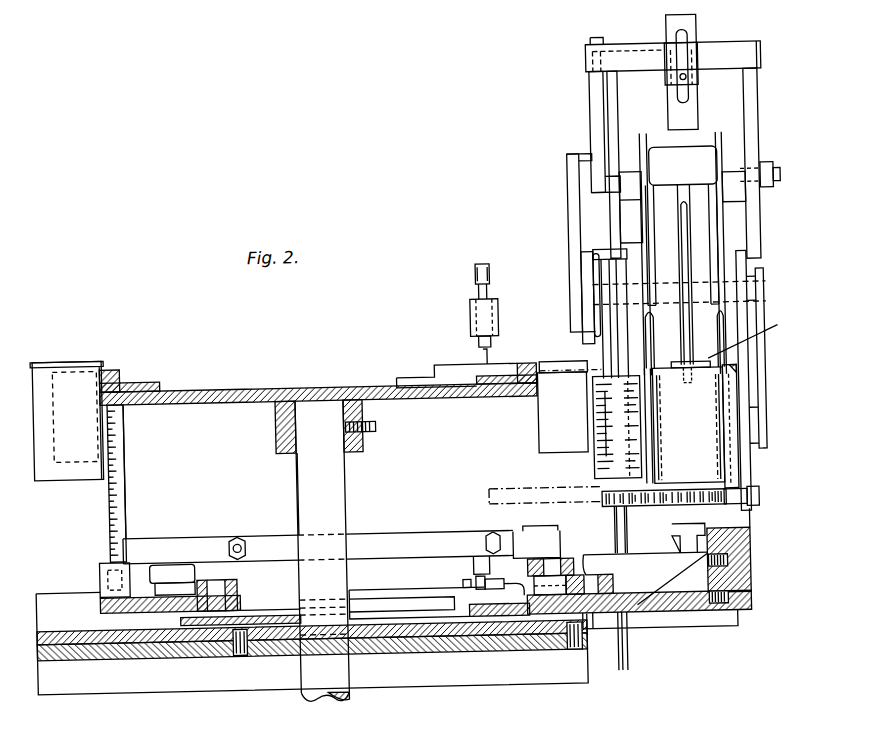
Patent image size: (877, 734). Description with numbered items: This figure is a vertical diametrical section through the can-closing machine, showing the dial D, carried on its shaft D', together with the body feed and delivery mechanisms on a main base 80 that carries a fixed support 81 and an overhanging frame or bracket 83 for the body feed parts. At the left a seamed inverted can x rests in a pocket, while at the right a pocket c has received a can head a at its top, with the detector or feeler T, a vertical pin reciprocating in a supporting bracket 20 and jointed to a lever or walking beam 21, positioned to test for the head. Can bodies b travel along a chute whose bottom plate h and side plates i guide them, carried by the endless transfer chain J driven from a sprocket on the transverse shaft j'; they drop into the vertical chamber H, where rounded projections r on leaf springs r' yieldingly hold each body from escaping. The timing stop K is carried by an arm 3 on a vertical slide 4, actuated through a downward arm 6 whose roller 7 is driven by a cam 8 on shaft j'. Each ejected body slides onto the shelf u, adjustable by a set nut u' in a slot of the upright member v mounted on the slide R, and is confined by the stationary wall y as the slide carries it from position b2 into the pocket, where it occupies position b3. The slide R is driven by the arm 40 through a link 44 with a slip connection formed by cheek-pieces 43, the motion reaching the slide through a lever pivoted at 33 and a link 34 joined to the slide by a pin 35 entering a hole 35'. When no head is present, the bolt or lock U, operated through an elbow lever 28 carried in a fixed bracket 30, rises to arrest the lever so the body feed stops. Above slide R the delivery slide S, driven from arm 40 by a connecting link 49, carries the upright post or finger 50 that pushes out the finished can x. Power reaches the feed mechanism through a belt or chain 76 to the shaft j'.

The arm 3 is at (646, 66).
The vertical slide 4 is at (600, 87).
The timing stop K is at (704, 109).
The overhanging frame or bracket 83 is at (764, 152).
The can body b is at (689, 162).
The downward arm 6 is at (576, 216).
The side plates i is at (683, 253).
The transfer means J is at (694, 250).
The bottom plate h is at (682, 245).
The roller 7 is at (592, 304).
The cam 8 is at (590, 322).
The transverse shaft j' is at (689, 293).
The rounded projections r is at (666, 340).
The leaf springs r' is at (749, 336).
The vertical chamber H is at (737, 355).
The can head a is at (572, 369).
The detector or feeler T is at (497, 365).
The supporting bracket 20 is at (509, 321).
The lever or walking beam 21 is at (492, 272).
The pocket c is at (562, 412).
The stationary wall y is at (617, 427).
The position of ejected body b2 is at (684, 425).
The shelf u is at (675, 509).
The set nut u' is at (762, 504).
The upright member v is at (749, 478).
The position of body in pocket b3 is at (539, 492).
The dial D is at (319, 450).
The seamed inverted can x is at (68, 421).
The upright post or finger 50 is at (121, 458).
The arm 40 is at (172, 560).
The connecting link 49 is at (208, 572).
The cheek-pieces 43 is at (191, 549).
The link 44 is at (318, 547).
The bolt or lock U is at (478, 571).
The pivot 33 is at (556, 561).
The slide R is at (388, 617).
The elbow lever 28 is at (473, 583).
The fixed bracket 30 is at (510, 597).
The link 34 is at (592, 573).
The hole 35' is at (623, 587).
The pin 35 is at (598, 646).
The belt or chain 76 is at (622, 674).
The fixed support 81 is at (720, 633).
The delivery slide S is at (160, 604).
The main base 80 is at (312, 638).
The shaft D' is at (322, 550).